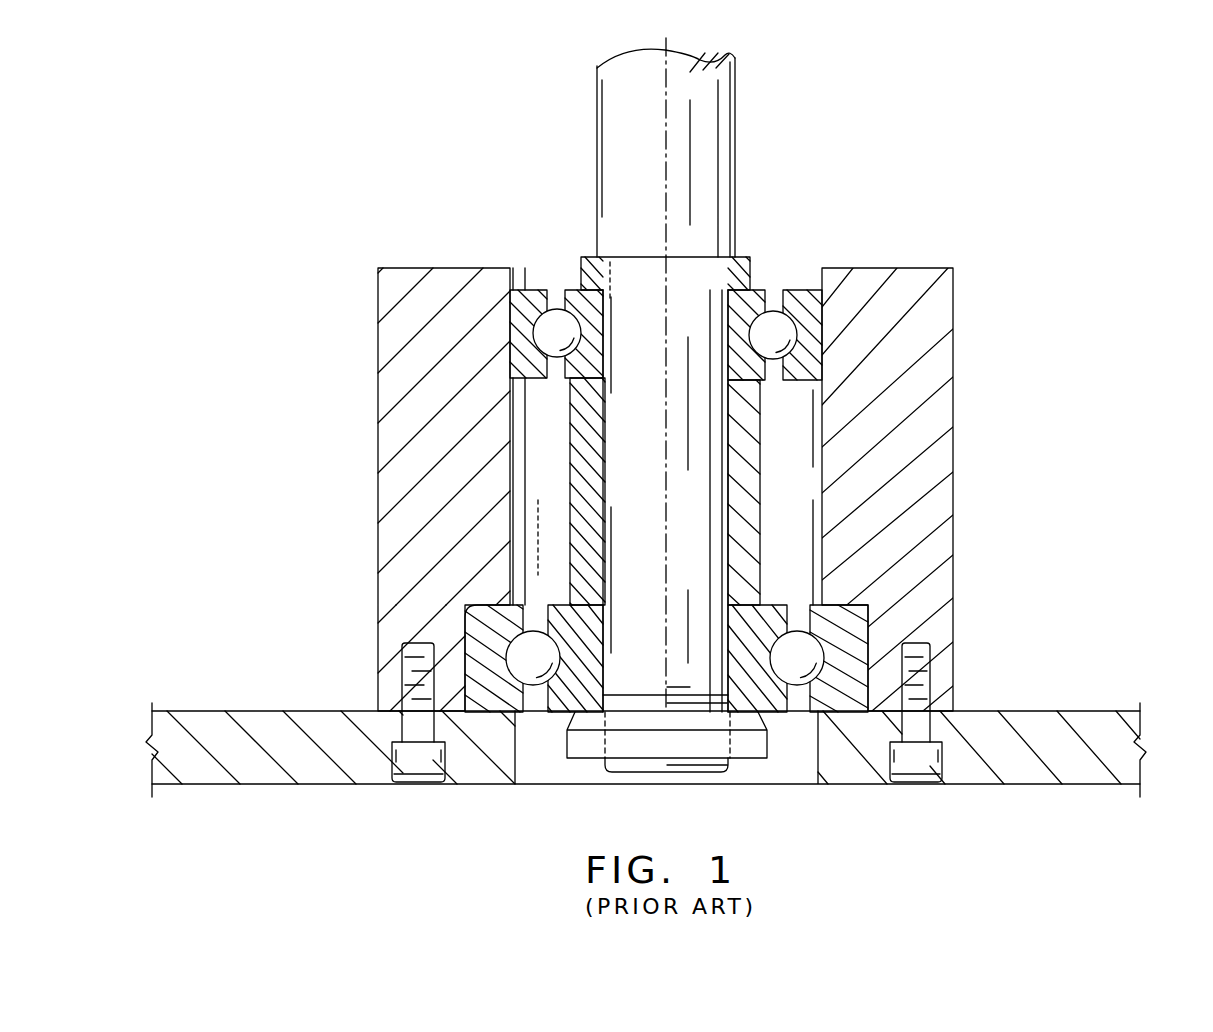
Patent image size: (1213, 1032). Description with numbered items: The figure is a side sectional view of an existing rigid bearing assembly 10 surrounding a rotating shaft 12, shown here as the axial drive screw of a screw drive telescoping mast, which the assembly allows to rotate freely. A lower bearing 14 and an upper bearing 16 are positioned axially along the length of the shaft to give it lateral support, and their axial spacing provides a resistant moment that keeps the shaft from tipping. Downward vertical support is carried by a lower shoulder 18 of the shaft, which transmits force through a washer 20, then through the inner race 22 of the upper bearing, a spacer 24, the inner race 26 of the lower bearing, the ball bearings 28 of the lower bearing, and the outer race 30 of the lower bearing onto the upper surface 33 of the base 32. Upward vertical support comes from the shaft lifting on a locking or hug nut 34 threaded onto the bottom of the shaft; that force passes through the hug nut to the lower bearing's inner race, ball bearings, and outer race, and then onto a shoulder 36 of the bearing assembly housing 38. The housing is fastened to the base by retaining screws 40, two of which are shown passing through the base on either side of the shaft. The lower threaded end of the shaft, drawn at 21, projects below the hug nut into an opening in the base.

The rigid bearing assembly 10 is at (340, 297).
The rotating shaft 12 is at (737, 138).
The lower bearing 14 is at (868, 636).
The upper bearing 16 is at (826, 329).
The lower shoulder 18 is at (630, 262).
The washer 20 is at (750, 263).
The shaft end 21 is at (630, 765).
The inner race of upper bearing 22 is at (772, 290).
The spacer 24 is at (757, 430).
The inner race of the lower bearing 26 is at (770, 603).
The ball bearings 28 is at (824, 660).
The outer race 30 is at (852, 610).
The base 32 is at (1113, 713).
The upper surface 33 is at (1035, 712).
The hug nut 34 is at (750, 752).
The shoulder 36 is at (478, 608).
The bearing assembly housing 38 is at (956, 445).
The retaining screws 40 is at (417, 763).